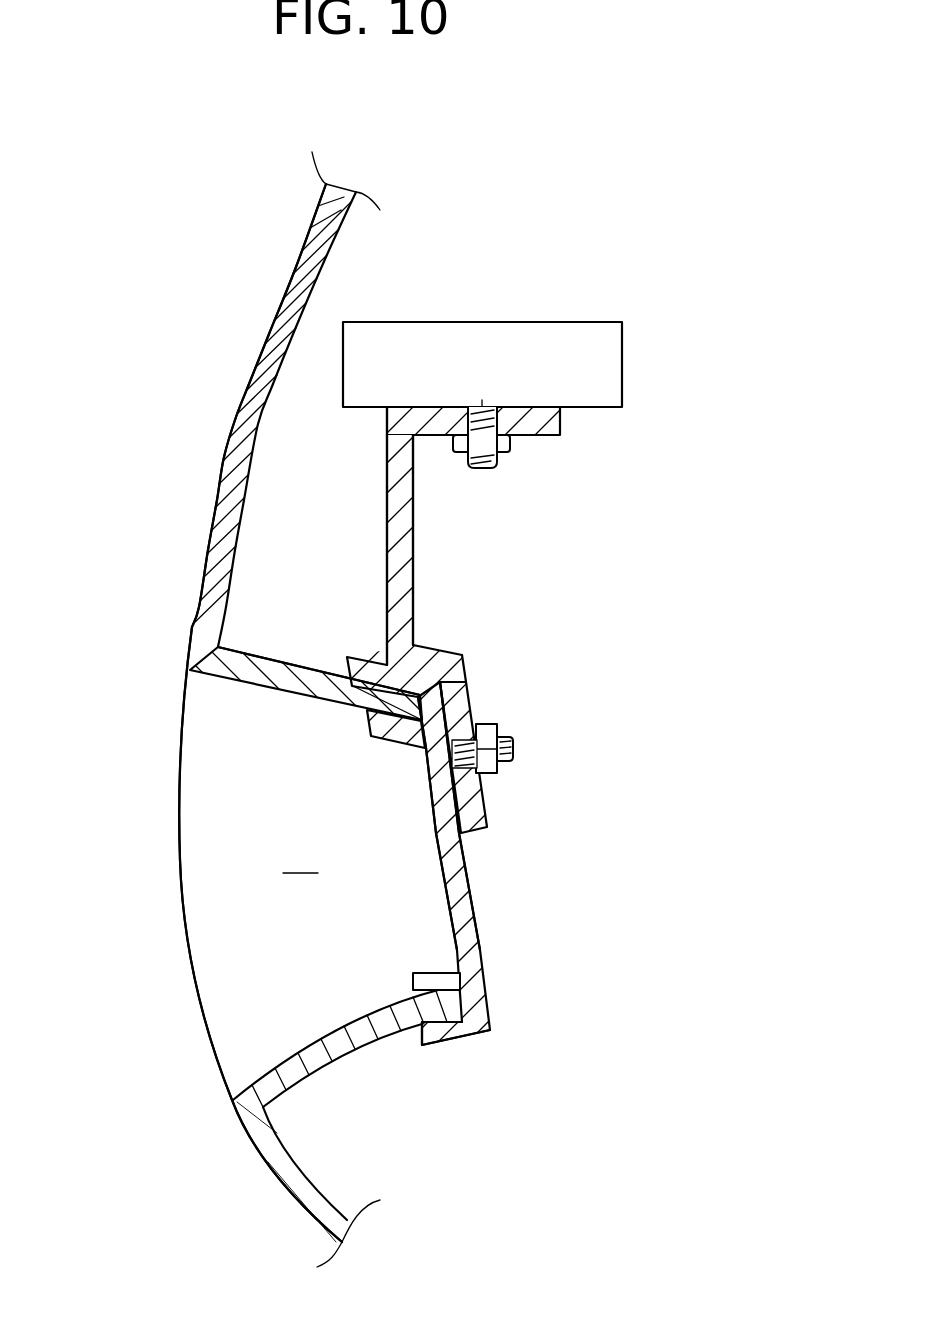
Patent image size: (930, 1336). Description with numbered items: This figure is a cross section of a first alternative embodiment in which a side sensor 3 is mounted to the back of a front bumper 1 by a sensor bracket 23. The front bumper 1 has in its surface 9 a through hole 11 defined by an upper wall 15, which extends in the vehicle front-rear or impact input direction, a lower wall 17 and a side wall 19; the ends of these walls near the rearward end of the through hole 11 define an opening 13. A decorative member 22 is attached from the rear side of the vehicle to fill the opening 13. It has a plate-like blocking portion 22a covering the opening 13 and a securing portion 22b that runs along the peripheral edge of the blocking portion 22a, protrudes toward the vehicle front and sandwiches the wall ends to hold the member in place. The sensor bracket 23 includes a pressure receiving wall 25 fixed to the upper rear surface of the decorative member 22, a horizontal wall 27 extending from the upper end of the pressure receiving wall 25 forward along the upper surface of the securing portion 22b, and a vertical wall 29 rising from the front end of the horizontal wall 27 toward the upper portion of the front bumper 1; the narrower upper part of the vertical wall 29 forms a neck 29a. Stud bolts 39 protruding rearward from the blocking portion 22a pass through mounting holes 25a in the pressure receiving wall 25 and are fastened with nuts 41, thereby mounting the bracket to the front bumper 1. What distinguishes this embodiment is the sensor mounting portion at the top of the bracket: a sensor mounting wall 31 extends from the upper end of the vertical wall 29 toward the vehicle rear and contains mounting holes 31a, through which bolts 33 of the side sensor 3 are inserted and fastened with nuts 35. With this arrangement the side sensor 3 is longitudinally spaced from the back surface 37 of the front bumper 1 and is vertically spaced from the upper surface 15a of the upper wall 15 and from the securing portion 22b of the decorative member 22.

The front bumper 1 is at (190, 626).
The side sensor 3 is at (565, 333).
The surface 9 is at (224, 497).
The through hole 11 is at (303, 854).
The opening 13 is at (413, 975).
The upper wall 15 is at (304, 695).
The upper surface 15a is at (318, 670).
The lower wall 17 is at (378, 1030).
The side wall 19 is at (237, 800).
The decorative member 22 is at (470, 884).
The blocking portion 22a is at (467, 933).
The securing portion 22b is at (463, 1032).
The sensor bracket 23 is at (414, 585).
The pressure receiving wall 25 is at (458, 688).
The mounting holes 25a is at (512, 742).
The horizontal wall 27 is at (430, 650).
The vertical wall 29 is at (403, 622).
The neck 29a is at (392, 492).
The sensor mounting wall 31 is at (548, 420).
The mounting holes 31a is at (482, 408).
The bolts 33 is at (483, 470).
The nuts 35 is at (505, 452).
The back surface 37 is at (323, 262).
The stud bolts 39 is at (497, 758).
The nuts 41 is at (490, 772).